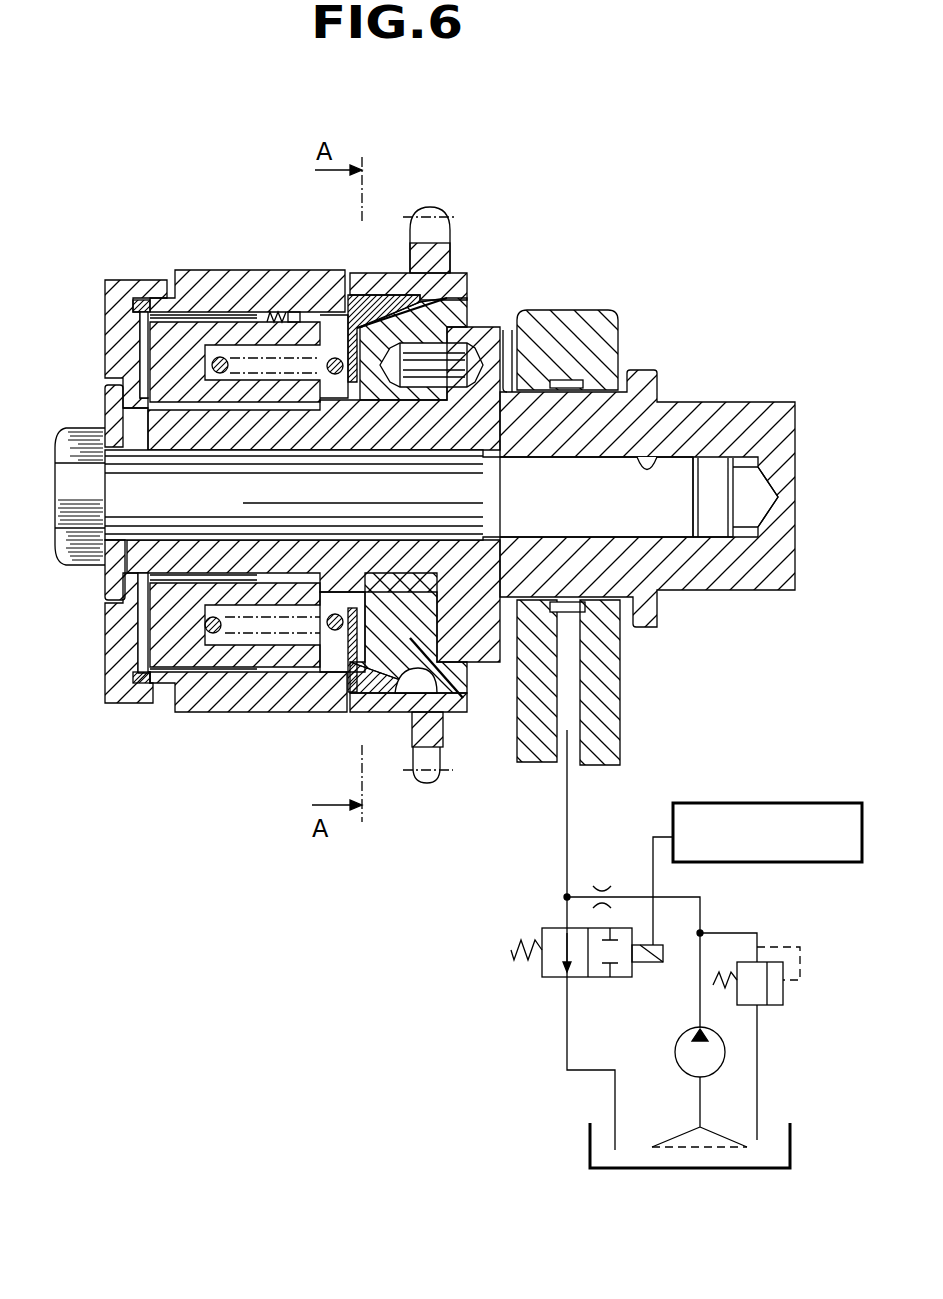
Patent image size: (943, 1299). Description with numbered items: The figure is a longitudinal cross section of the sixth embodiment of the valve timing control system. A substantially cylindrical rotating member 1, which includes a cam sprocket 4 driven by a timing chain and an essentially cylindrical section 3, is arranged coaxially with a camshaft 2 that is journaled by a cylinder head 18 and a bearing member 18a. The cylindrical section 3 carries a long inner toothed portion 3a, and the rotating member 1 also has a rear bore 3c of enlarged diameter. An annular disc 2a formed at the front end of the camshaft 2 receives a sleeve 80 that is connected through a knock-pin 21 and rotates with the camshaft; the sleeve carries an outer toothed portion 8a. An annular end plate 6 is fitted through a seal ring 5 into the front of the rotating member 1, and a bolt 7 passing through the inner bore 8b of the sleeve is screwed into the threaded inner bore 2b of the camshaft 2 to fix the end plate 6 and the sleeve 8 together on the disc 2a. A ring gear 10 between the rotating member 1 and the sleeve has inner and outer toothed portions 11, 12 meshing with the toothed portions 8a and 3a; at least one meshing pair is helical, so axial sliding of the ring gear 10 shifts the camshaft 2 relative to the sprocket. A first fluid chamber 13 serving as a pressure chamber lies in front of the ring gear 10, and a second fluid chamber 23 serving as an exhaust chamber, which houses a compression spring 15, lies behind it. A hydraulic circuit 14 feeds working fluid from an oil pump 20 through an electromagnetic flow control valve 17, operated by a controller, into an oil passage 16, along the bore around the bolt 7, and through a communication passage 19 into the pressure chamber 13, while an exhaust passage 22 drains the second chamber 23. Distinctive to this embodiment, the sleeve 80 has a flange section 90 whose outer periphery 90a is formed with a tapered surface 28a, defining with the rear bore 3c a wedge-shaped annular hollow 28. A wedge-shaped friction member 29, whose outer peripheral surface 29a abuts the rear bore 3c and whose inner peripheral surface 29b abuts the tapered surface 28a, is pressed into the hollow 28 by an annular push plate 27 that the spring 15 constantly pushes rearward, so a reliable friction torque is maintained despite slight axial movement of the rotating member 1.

The rotating member 1 is at (238, 266).
The camshaft 2 is at (735, 405).
The annular disc 2a is at (505, 327).
The inner bore 2b is at (655, 457).
The cylindrical section 3 is at (203, 268).
The inner toothed portion 3a is at (200, 670).
The rear bore 3c is at (400, 272).
The cam sprocket 4 is at (432, 209).
The seal ring 5 is at (137, 303).
The annular end plate 6 is at (135, 297).
The bolt 7 is at (65, 482).
The inner cylindrical sleeve 8 is at (200, 563).
The outer toothed portion 8a is at (243, 668).
The inner bore 8b is at (399, 457).
The ring gear 10 is at (260, 318).
The inner toothed portion 11 is at (110, 587).
The outer toothed portion 12 is at (163, 690).
The first fluid chamber 13 is at (143, 350).
The hydraulic circuit 14 is at (664, 985).
The compression spring 15 is at (318, 660).
The oil passage 16 is at (570, 657).
The electromagnetic flow control valve 17 is at (545, 976).
The cylinder head 18 is at (620, 730).
The bearing member 18a is at (620, 325).
The communication passage 19 is at (157, 435).
The engine oil pump 20 is at (673, 1047).
The knock-pin 21 is at (442, 355).
The exhaust passage 22 is at (330, 332).
The second fluid chamber 23 is at (322, 318).
The annular push plate 27 is at (350, 668).
The annular hollow 28 is at (440, 290).
The tapered surface 28a is at (378, 292).
The friction member 29 is at (378, 705).
The outer peripheral surface 29a is at (392, 690).
The inner peripheral surface 29b is at (455, 715).
The sleeve 80 is at (283, 672).
The flange section 90 is at (467, 690).
The outer periphery 90a is at (443, 294).